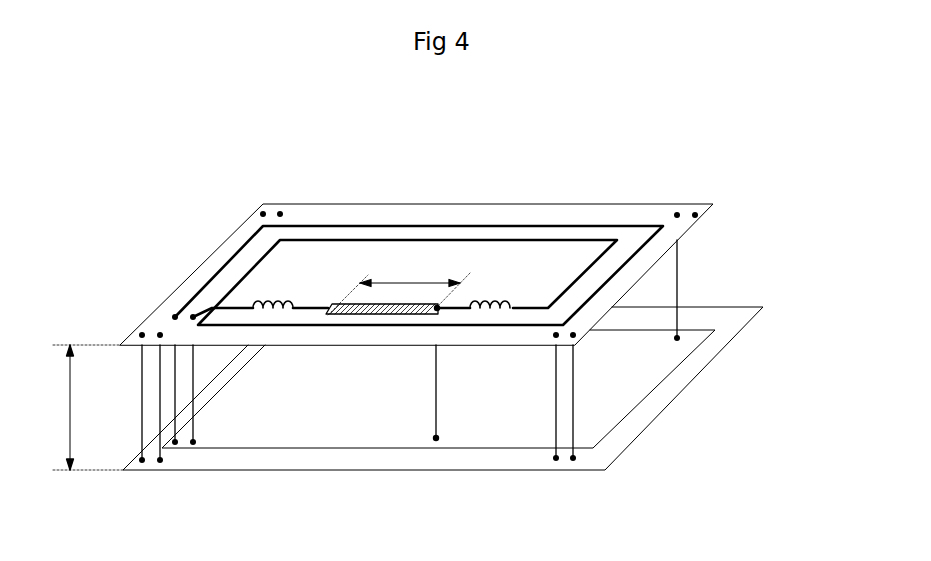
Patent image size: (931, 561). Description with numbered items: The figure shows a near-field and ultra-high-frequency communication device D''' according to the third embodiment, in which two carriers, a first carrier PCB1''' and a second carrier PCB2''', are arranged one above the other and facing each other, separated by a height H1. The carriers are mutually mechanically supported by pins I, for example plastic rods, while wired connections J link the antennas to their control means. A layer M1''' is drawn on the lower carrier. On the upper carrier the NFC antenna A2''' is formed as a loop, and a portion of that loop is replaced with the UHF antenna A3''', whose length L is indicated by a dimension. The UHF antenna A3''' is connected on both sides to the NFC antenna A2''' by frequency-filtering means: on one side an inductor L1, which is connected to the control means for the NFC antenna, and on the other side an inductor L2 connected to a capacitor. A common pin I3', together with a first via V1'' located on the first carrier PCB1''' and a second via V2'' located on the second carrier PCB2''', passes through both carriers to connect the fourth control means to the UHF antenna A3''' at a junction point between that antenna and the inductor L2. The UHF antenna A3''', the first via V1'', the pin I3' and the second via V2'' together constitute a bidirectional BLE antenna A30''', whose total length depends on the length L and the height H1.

The near-field and ultra-high-frequency communication device D''' is at (433, 334).
The first carrier PCB1''' is at (450, 235).
The second carrier PCB2''' is at (475, 355).
The metal layer / ground plane M1''' is at (451, 395).
The NFC antenna A2''' is at (418, 238).
The UHF antenna A3''' is at (356, 343).
The bidirectional BLE antenna A30''' is at (382, 424).
The inductor L1 is at (273, 291).
The inductor L2 is at (474, 290).
The length of the ultra-high-frequency antenna L is at (399, 285).
The height of the pin H1 is at (81, 407).
The pins I is at (142, 405).
The wired connections J is at (193, 380).
The pin I3' is at (490, 440).
The first via V1'' is at (532, 411).
The second via V2'' is at (462, 488).